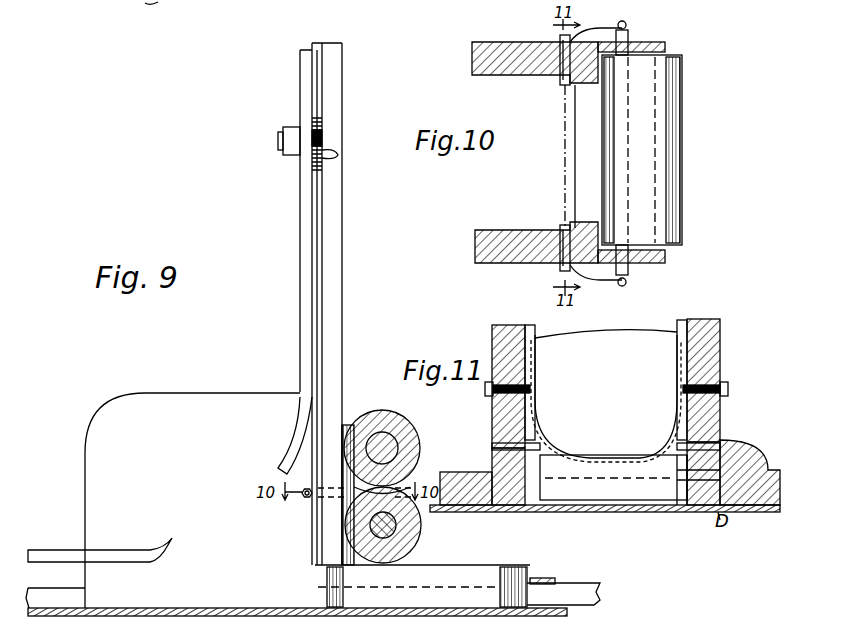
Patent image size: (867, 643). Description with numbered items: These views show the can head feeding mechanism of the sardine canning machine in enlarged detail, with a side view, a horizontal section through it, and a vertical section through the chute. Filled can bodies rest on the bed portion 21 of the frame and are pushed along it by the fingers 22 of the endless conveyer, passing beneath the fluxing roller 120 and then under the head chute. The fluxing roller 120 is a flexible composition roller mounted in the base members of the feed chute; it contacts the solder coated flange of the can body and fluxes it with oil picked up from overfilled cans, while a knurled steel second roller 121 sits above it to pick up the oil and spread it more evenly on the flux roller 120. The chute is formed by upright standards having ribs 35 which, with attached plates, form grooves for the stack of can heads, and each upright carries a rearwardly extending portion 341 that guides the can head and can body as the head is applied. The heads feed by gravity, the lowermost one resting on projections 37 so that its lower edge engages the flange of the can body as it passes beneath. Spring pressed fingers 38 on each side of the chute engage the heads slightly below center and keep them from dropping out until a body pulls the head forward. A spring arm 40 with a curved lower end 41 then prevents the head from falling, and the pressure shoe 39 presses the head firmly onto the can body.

In FIG. 9, the rearwardly extending portion 341 is at (85, 448).
In FIG. 10, the rearwardly extending portion 341 is at (472, 48).
In FIG. 11, the rearwardly extending portion 341 is at (492, 414).
In FIG. 9, the bed portion 21 is at (268, 617).
In FIG. 11, the bed portion 21 is at (596, 513).
In FIG. 9, the fingers or flights 22 is at (556, 586).
In FIG. 11, the fingers or flights 22 is at (675, 512).
In FIG. 9, the pressure shoe 39 is at (44, 550).
In FIG. 9, the spring arm 40 is at (300, 170).
In FIG. 9, the curved lower end 41 is at (283, 460).
In FIG. 9, the ribs 35 is at (344, 410).
In FIG. 10, the ribs 35 is at (584, 78).
In FIG. 11, the ribs 35 is at (553, 322).
In FIG. 11, the projections 37 is at (492, 446).
In FIG. 9, the spring pressed fingers 38 is at (305, 500).
In FIG. 10, the spring pressed fingers 38 is at (562, 82).
In FIG. 11, the spring pressed fingers 38 is at (533, 391).
In FIG. 9, the fluxing roller 120 is at (423, 540).
In FIG. 10, the fluxing roller 120 is at (684, 181).
In FIG. 9, the second roller 121 is at (390, 422).